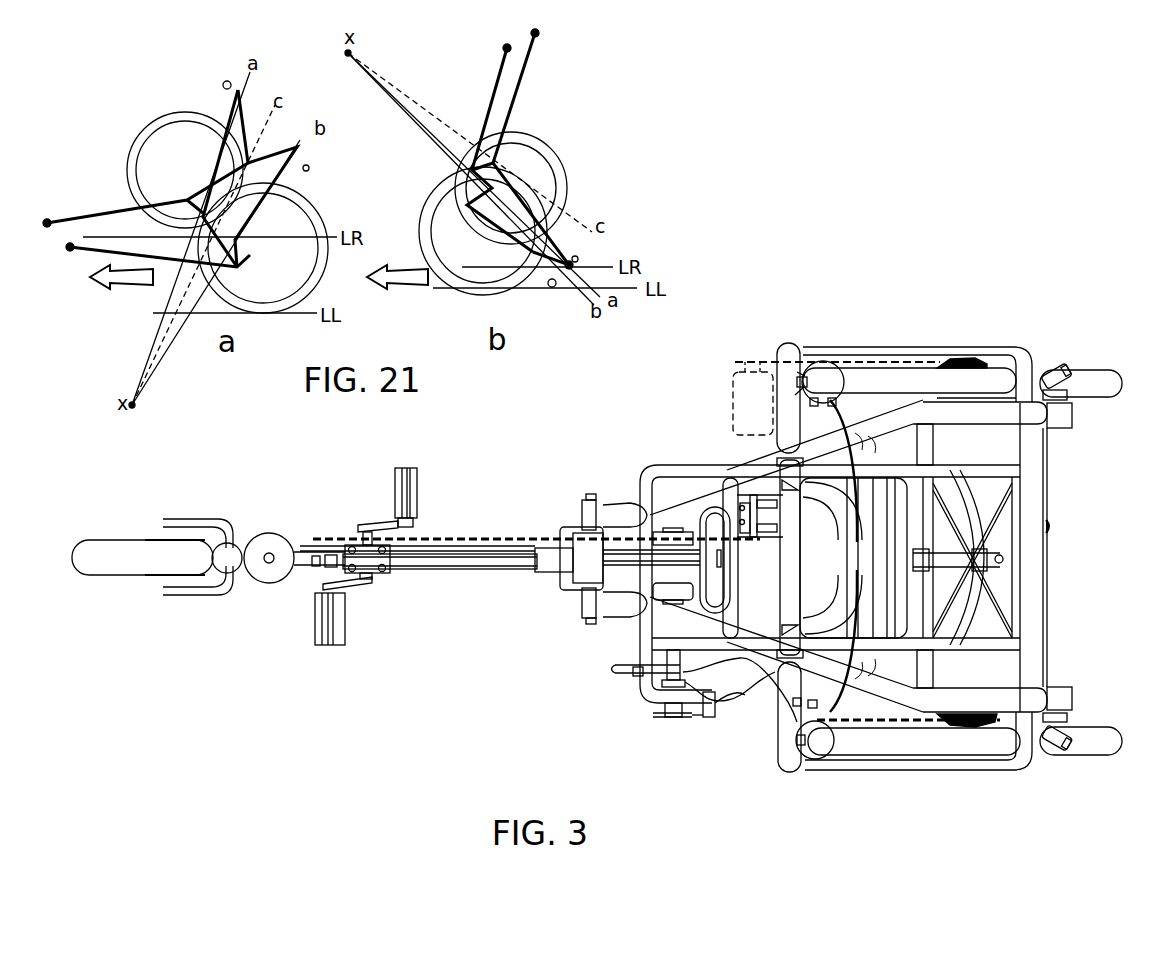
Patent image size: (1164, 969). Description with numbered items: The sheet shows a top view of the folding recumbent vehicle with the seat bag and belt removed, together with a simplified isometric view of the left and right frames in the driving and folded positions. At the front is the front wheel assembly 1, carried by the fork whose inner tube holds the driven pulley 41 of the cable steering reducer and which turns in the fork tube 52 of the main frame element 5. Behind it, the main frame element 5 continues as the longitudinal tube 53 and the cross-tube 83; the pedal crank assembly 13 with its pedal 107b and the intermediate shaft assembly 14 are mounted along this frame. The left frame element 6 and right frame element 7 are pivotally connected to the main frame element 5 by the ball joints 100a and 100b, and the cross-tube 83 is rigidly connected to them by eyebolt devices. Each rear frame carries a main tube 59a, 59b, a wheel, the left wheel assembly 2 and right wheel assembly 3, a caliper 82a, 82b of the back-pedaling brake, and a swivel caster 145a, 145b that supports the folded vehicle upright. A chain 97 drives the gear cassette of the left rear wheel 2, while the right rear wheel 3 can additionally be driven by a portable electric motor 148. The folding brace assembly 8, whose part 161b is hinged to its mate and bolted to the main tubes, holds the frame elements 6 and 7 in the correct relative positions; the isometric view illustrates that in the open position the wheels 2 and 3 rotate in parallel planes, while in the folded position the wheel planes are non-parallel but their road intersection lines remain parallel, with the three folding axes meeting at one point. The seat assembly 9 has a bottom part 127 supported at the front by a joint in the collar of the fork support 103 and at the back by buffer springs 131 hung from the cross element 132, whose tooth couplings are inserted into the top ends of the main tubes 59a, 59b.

In FIG. 3, the front wheel assembly 1 is at (103, 535).
In FIG. 21, the left wheel assembly 2 is at (312, 192).
In FIG. 3, the left wheel assembly 2 is at (1090, 762).
In FIG. 21, the right wheel assembly 3 is at (128, 132).
In FIG. 3, the right wheel assembly 3 is at (1093, 362).
In FIG. 3, the main frame element assembly 5 is at (460, 575).
In FIG. 21, the left frame element assembly 6 is at (299, 161).
In FIG. 3, the left frame element assembly 6 is at (760, 747).
In FIG. 21, the right frame element assembly 7 is at (295, 128).
In FIG. 3, the right frame element assembly 7 is at (772, 348).
In FIG. 21, the folding brace assembly 8 is at (270, 147).
In FIG. 3, the folding brace assembly 8 is at (1010, 570).
In FIG. 3, the seat assembly 9 is at (647, 467).
In FIG. 3, the pedal crank assembly 13 is at (368, 595).
In FIG. 3, the intermediate shaft assembly 14 is at (673, 735).
In FIG. 3, the driven pulley 41 is at (273, 535).
In FIG. 3, the fork tube 52 is at (228, 556).
In FIG. 3, the longitudinal tube 53 is at (457, 548).
In FIG. 3, the main tube 59a is at (993, 697).
In FIG. 3, the main tube 59b is at (997, 417).
In FIG. 3, the caliper 82a is at (807, 767).
In FIG. 3, the caliper 82b is at (803, 353).
In FIG. 3, the cross-tube 83 is at (793, 603).
In FIG. 3, the chain 97 is at (740, 722).
In FIG. 3, the ball joint 100a is at (590, 598).
In FIG. 3, the ball joint 100b is at (587, 522).
In FIG. 3, the fork support 103 is at (567, 537).
In FIG. 3, the pedal 107b is at (400, 488).
In FIG. 3, the bottom part 127 is at (708, 473).
In FIG. 3, the buffer spring 131 is at (1050, 527).
In FIG. 3, the cross element 132 is at (1035, 550).
In FIG. 21, the swivel caster 145a is at (553, 288).
In FIG. 3, the swivel caster 145a is at (1075, 728).
In FIG. 21, the swivel caster 145b is at (223, 84).
In FIG. 3, the swivel caster 145b is at (1062, 368).
In FIG. 3, the portable electric motor 148 is at (743, 397).
In FIG. 3, the folding brace part 161b is at (1000, 520).